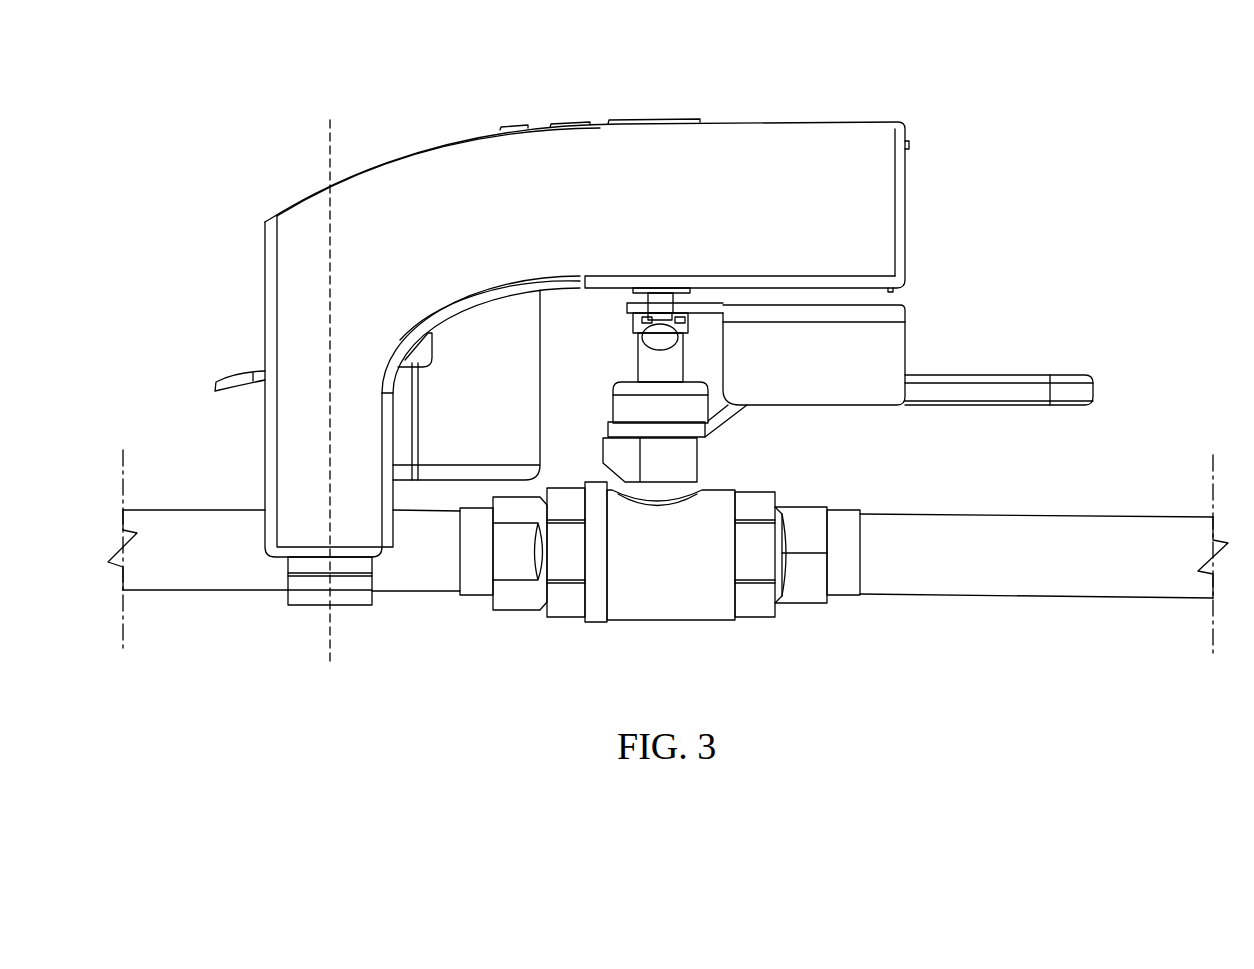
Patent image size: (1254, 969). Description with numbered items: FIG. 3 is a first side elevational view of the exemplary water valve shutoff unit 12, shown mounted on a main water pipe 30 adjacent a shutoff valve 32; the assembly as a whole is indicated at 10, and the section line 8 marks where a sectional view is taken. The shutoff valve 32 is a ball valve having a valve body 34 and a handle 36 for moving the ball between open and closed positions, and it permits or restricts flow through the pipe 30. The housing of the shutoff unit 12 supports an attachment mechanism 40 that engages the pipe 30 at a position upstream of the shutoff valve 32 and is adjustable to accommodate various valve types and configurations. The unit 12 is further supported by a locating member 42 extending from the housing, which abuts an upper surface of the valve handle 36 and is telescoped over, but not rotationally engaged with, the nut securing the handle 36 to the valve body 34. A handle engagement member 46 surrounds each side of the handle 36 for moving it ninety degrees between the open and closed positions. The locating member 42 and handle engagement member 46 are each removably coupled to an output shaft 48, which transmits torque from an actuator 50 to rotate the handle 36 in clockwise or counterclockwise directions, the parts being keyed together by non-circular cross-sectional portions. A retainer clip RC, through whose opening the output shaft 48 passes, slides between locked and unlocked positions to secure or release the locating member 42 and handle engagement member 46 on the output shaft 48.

The section line 8- 8 is at (297, 662).
The valve actuator assembly 10 is at (398, 110).
The water valve shutoff unit 12 is at (846, 116).
The main water pipe 30 is at (1016, 523).
The shutoff valve 32 is at (673, 636).
The valve body 34 is at (702, 503).
The handle 36 is at (1025, 388).
The attachment mechanism 40 is at (348, 598).
The locating member 42 is at (620, 411).
The handle engagement member 46 is at (898, 335).
The output shaft 48 is at (655, 294).
The actuator 50 is at (517, 357).
The retainer clip RC is at (667, 338).